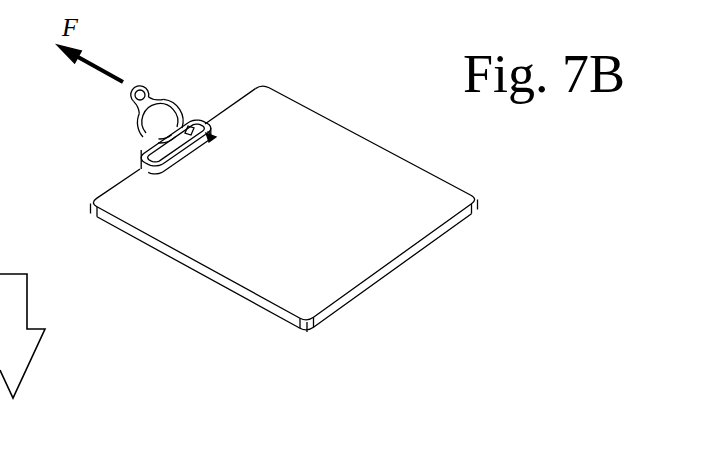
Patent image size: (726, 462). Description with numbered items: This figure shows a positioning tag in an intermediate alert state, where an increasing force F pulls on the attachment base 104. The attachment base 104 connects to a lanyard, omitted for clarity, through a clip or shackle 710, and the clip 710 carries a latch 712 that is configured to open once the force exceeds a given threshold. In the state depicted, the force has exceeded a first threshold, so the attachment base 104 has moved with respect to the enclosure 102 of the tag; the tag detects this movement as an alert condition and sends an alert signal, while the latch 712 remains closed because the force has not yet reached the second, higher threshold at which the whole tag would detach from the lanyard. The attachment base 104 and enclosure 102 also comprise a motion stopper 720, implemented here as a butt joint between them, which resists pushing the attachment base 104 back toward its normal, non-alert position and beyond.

The enclosure 102 is at (289, 96).
The attachment base 104 is at (141, 140).
The clip 710 is at (141, 86).
The latch 712 is at (184, 108).
The motion stopper 720 is at (214, 134).